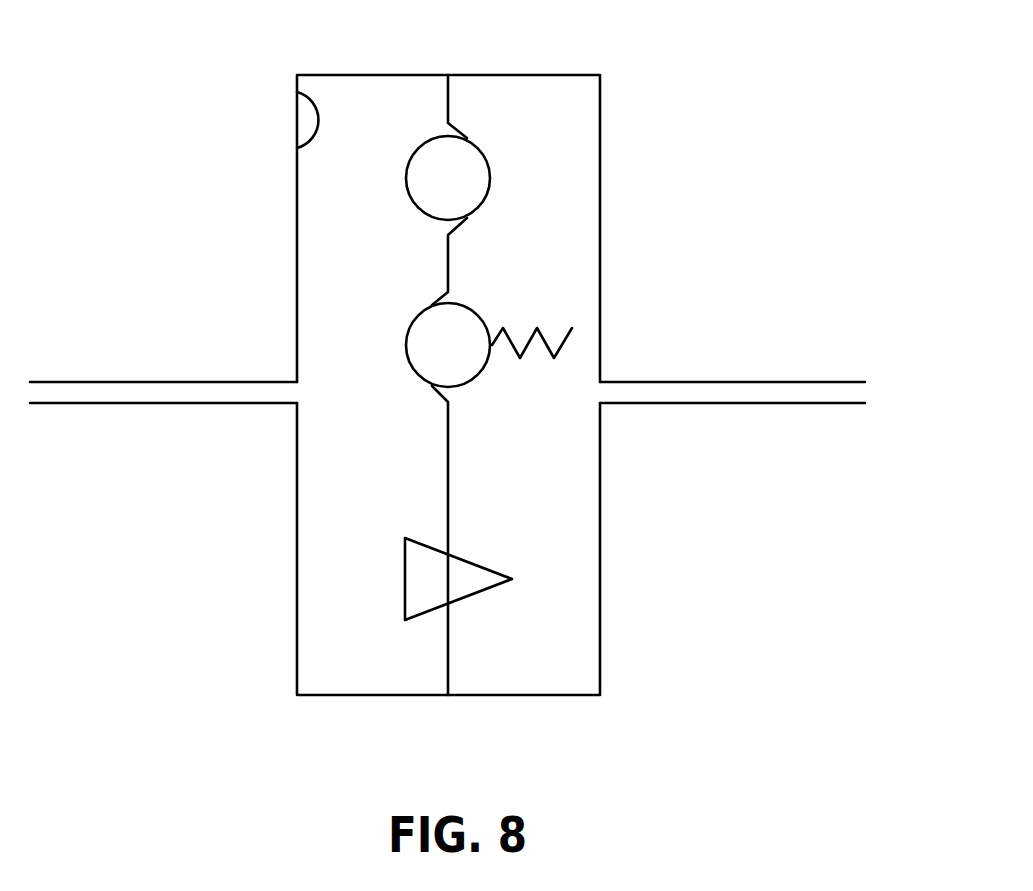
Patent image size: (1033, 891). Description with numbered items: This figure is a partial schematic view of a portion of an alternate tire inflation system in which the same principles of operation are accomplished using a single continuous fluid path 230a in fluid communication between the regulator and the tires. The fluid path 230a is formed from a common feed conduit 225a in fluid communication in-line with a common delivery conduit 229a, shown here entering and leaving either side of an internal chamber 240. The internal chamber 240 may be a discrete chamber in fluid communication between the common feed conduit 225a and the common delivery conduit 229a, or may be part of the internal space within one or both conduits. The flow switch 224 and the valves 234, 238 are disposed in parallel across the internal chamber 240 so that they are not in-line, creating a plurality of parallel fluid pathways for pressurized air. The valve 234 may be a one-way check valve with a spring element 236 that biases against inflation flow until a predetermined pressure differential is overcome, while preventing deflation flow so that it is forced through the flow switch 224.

The fluid path 230a is at (237, 342).
The common feed conduit 225a is at (146, 382).
The common delivery conduit 229a is at (782, 382).
The internal chamber 240 is at (298, 146).
The valve 238 is at (473, 142).
The valve 234 is at (465, 307).
The spring element 236 is at (513, 347).
The flow switch 224 is at (487, 569).